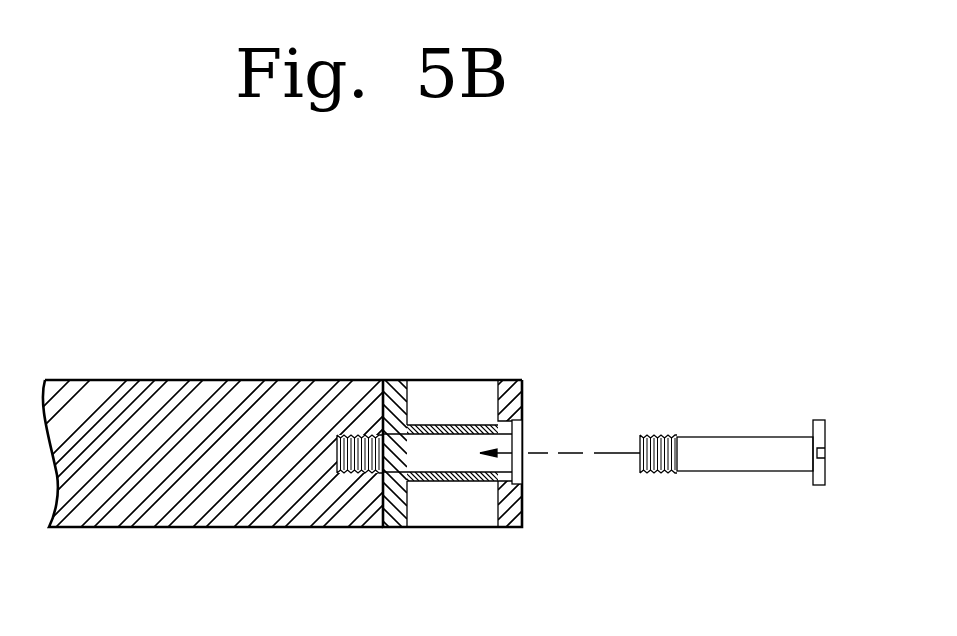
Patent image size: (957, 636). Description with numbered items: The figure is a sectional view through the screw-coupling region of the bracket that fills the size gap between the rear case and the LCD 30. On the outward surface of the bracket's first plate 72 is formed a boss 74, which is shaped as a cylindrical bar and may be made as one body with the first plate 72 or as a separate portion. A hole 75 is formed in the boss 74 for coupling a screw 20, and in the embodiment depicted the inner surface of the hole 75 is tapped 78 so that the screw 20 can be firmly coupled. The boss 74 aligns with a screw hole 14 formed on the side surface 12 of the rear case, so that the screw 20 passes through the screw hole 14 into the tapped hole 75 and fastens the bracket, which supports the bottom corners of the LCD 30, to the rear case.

The LCD 30 is at (253, 373).
The first plate 72 is at (415, 380).
The hole 75 is at (465, 455).
The screw hole 14 is at (514, 437).
The screw 20 is at (747, 435).
The tapped inner surface 78 is at (353, 562).
The boss 74 is at (438, 560).
The side surface 12 is at (502, 590).